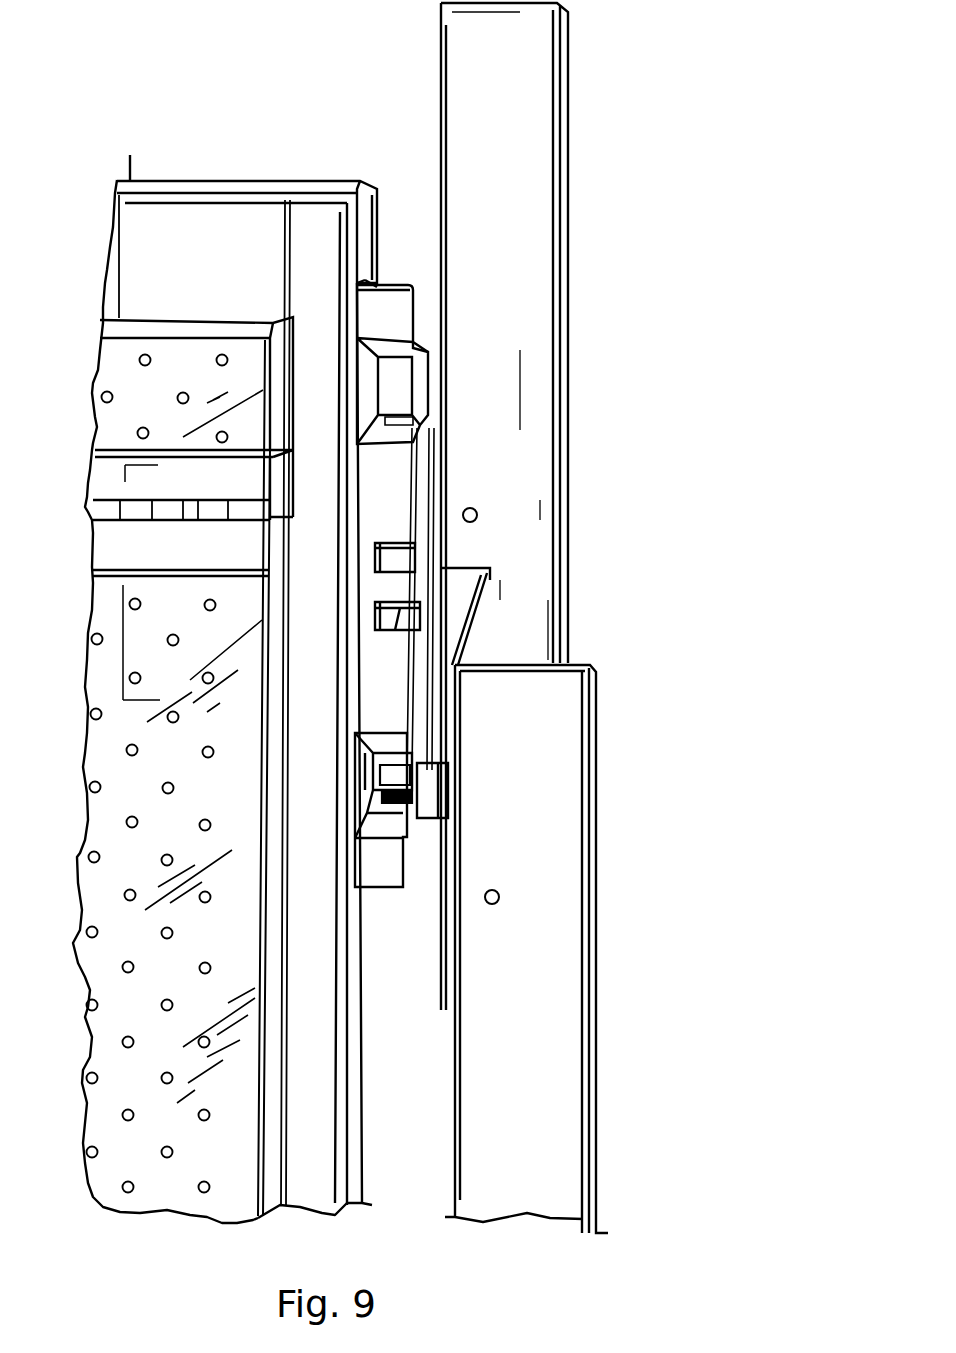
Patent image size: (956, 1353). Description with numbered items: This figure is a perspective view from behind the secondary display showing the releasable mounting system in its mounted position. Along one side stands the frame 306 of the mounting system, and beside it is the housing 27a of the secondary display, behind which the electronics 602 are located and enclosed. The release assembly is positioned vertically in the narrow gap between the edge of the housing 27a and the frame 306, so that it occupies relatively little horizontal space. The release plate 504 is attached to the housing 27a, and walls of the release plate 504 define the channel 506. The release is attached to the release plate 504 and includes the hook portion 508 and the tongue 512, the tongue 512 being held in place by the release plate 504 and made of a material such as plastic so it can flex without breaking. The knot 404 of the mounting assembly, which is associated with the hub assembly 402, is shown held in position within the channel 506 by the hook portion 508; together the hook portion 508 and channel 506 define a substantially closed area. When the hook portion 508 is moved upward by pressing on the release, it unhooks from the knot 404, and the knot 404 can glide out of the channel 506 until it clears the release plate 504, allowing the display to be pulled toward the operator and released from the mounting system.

The frame 306 is at (495, 110).
The housing 27a is at (368, 205).
The release plate 504 is at (390, 312).
The tongue 512 is at (393, 600).
The hook portion 508 is at (392, 773).
The knot 404 is at (417, 798).
The hub assembly 402 is at (447, 885).
The channel 506 is at (404, 821).
The electronics 602 is at (153, 945).